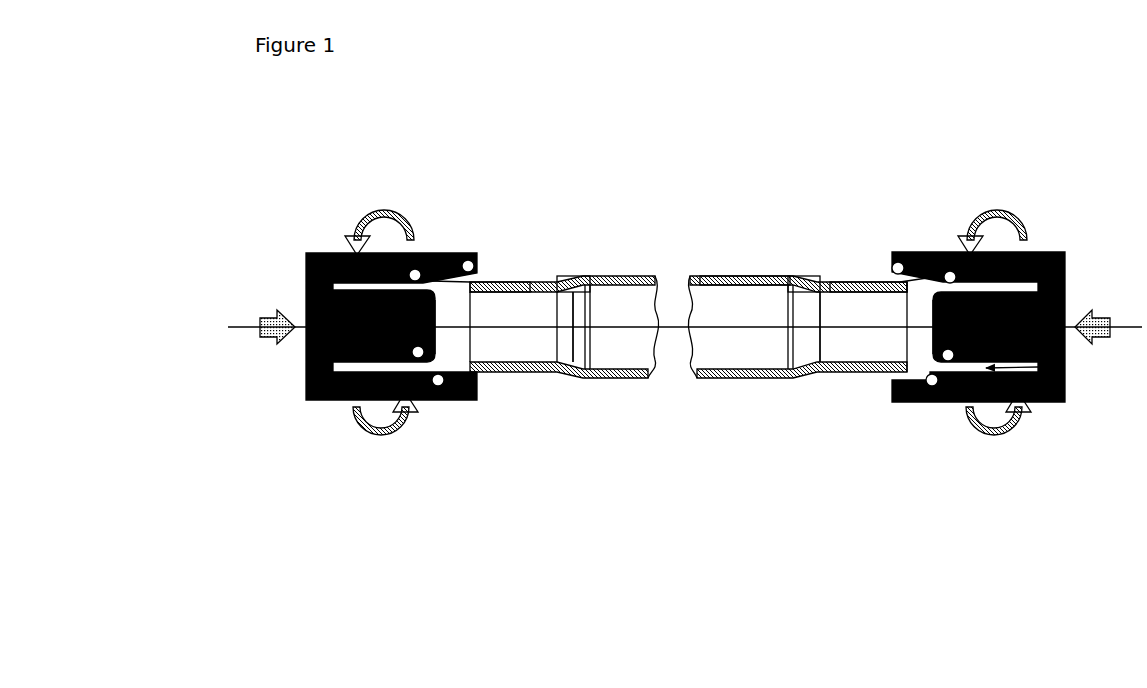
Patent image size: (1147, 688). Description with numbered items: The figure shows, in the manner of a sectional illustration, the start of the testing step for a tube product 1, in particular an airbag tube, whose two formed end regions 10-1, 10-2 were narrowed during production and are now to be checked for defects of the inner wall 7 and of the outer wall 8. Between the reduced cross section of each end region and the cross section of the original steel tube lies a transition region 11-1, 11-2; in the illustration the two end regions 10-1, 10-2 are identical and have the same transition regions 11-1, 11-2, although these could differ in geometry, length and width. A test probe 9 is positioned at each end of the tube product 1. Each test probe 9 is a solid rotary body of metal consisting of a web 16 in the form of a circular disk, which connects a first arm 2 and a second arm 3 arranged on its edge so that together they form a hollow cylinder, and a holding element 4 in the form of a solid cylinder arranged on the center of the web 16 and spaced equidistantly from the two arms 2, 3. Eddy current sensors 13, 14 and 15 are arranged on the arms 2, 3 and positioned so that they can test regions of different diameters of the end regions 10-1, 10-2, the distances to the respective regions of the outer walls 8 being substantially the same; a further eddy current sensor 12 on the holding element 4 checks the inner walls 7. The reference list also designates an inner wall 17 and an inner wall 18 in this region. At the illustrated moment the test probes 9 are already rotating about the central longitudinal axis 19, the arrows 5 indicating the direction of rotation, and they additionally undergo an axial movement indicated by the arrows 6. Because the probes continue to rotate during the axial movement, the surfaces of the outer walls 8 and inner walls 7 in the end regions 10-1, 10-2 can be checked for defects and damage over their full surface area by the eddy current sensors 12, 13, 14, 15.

The tube product 1 is at (737, 279).
The first arm 2 is at (478, 268).
The second arm 3 is at (420, 400).
The holding element 4 is at (436, 338).
The arrows (direction of rotation) 5 is at (374, 434).
The arrows (axial movement) 6 is at (270, 340).
The inner wall 7 is at (525, 293).
The outer wall 8 is at (508, 283).
The test probe 9 is at (341, 198).
The end region 10-1 is at (775, 434).
The end region 10-2 is at (468, 432).
The transition region 11-1 is at (820, 266).
The transition region 11-2 is at (555, 266).
The eddy current sensor 12 is at (430, 358).
The eddy current sensor 13 is at (447, 253).
The eddy current sensor 14 is at (478, 262).
The eddy current sensor 15 is at (441, 400).
The web 16 is at (306, 300).
The inner wall 17 is at (433, 282).
The inner wall 18 is at (1066, 364).
The central longitudinal axis 19 is at (250, 333).